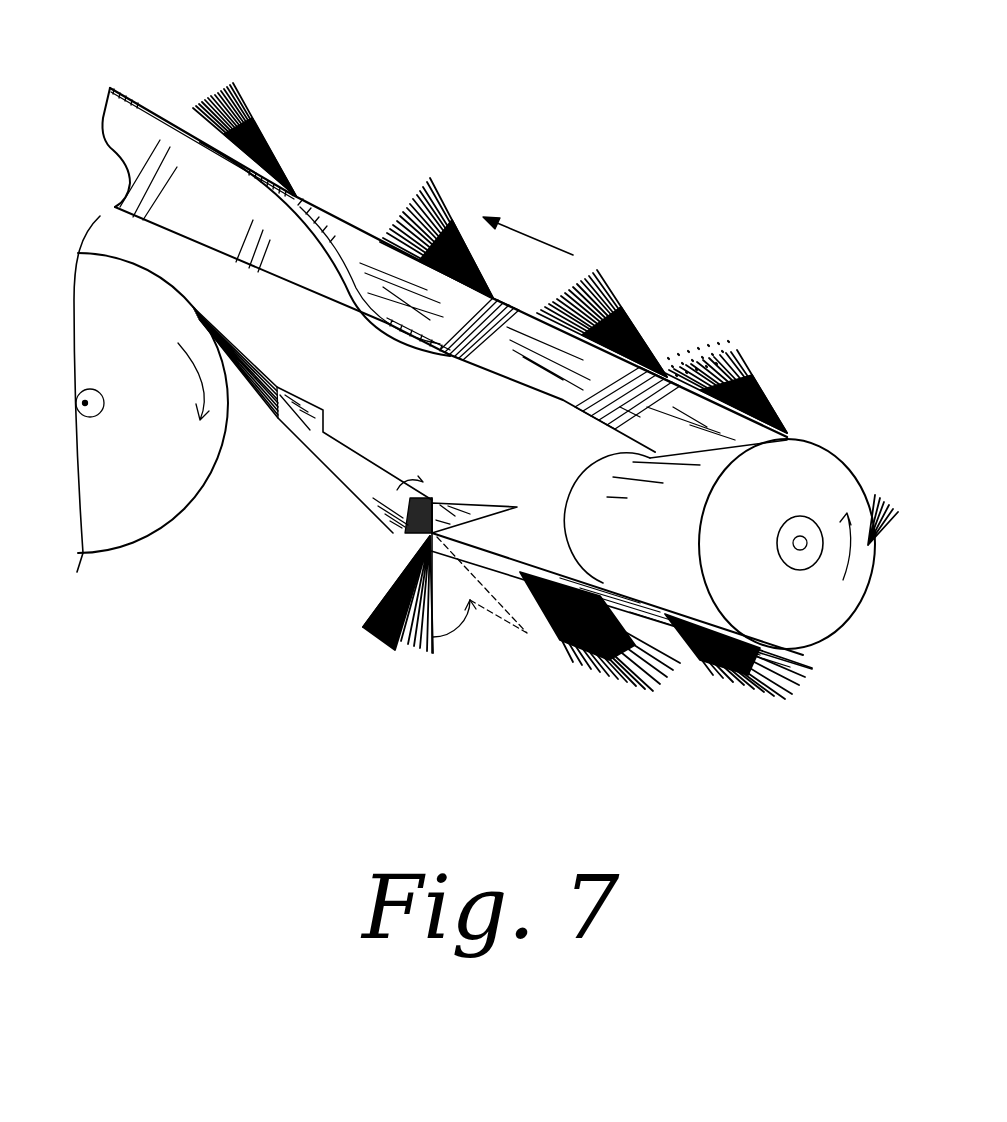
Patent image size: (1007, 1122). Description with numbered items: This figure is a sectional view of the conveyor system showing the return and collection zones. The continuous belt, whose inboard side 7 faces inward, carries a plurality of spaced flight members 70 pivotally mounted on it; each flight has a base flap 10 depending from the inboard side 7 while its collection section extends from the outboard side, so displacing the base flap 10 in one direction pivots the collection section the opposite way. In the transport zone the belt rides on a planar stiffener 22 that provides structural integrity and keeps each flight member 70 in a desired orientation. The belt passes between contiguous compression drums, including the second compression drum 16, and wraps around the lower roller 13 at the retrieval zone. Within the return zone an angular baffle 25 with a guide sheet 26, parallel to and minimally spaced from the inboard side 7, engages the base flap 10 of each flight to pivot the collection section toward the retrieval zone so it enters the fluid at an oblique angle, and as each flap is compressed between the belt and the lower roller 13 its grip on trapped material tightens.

The inboard side 7 is at (360, 252).
The base flap 10 is at (432, 500).
The lower roller 13 is at (803, 480).
The second compression drum 16 is at (167, 483).
The planar stiffener 22 is at (207, 181).
The angular baffle 25 is at (447, 517).
The guide sheet 26 is at (553, 553).
The flight members 70 is at (688, 358).